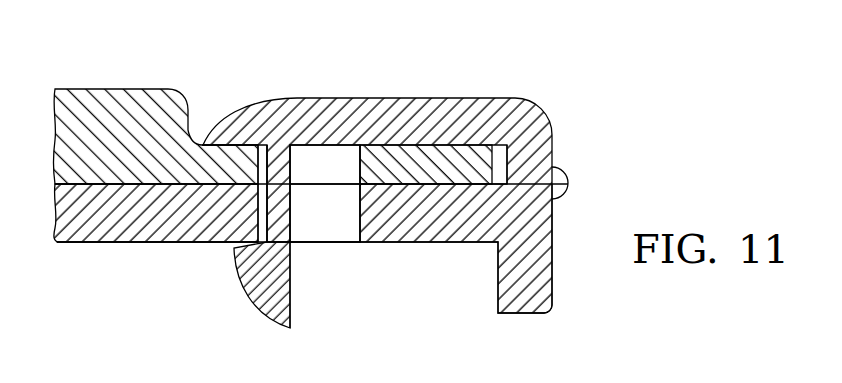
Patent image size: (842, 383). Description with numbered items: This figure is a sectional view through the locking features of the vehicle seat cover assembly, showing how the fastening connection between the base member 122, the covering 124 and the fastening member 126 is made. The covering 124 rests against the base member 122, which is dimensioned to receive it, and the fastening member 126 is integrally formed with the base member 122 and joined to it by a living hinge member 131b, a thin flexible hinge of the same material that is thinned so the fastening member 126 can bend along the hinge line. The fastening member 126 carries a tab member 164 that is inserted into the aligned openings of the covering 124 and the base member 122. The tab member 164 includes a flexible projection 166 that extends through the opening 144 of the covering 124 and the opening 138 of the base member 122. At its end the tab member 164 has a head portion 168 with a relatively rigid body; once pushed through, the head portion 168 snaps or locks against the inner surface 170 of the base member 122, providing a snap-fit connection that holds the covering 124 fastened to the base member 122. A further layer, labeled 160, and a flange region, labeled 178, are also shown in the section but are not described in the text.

The base member 122 is at (532, 248).
The covering 124 is at (90, 89).
The fastening member 126 is at (431, 97).
The living hinge member 131b is at (569, 176).
The opening of the base member 138 is at (342, 227).
The opening of the covering 144 is at (338, 153).
The insert 160 is at (473, 147).
The tab member 164 is at (281, 187).
The flexible projection 166 is at (290, 228).
The head portion 168 is at (268, 292).
The inner surface of the base member 170 is at (197, 243).
The flange 178 is at (232, 148).